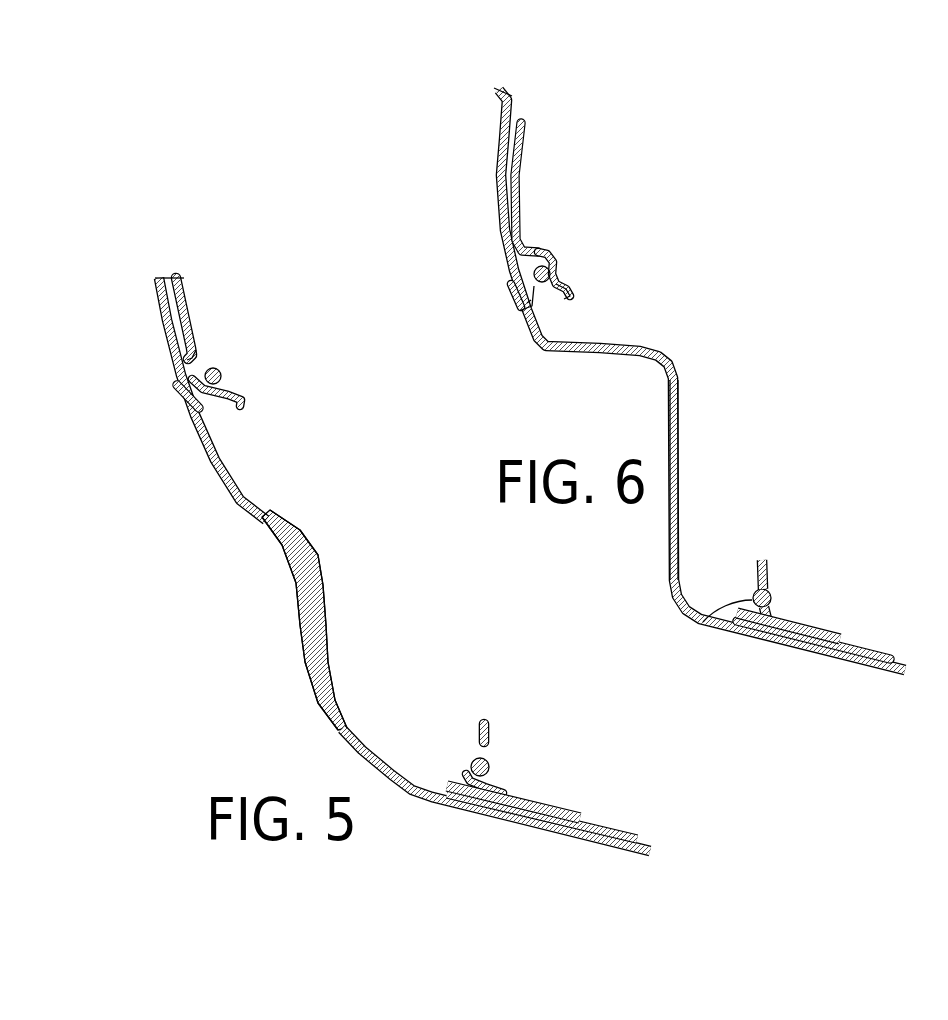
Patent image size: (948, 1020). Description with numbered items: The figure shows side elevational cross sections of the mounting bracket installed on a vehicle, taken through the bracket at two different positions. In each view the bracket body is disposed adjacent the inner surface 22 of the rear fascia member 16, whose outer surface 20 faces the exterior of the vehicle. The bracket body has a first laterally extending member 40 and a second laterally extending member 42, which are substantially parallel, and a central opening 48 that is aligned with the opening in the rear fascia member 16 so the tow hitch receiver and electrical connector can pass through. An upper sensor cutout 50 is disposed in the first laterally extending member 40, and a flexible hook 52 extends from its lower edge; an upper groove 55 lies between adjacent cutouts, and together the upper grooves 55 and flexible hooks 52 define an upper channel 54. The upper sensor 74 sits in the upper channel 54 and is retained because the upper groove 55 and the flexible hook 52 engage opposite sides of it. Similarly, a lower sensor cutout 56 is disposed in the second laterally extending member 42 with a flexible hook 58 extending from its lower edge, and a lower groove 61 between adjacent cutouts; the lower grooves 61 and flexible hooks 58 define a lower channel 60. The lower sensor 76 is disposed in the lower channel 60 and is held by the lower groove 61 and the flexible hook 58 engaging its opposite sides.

In FIG. 5, the rear fascia member 16 is at (296, 597).
In FIG. 6, the rear fascia member 16 is at (670, 538).
In FIG. 5, the outer surface 20 is at (318, 704).
In FIG. 6, the outer surface 20 is at (670, 410).
In FIG. 5, the inner surface 22 is at (262, 518).
In FIG. 6, the inner surface 22 is at (678, 430).
In FIG. 5, the first laterally extending member 40 is at (190, 320).
In FIG. 6, the first laterally extending member 40 is at (518, 200).
In FIG. 5, the second laterally extending member 42 is at (556, 803).
In FIG. 6, the second laterally extending member 42 is at (824, 630).
In FIG. 5, the central opening 48 is at (240, 405).
In FIG. 6, the central opening 48 is at (570, 297).
In FIG. 5, the upper sensor cutout 50 is at (195, 359).
In FIG. 5, the flexible hook 52 is at (178, 383).
In FIG. 6, the upper channel 54 is at (551, 268).
In FIG. 6, the upper groove 55 is at (512, 284).
In FIG. 5, the lower sensor cutout 56 is at (488, 745).
In FIG. 5, the flexible hook 58 is at (466, 773).
In FIG. 6, the lower channel 60 is at (770, 588).
In FIG. 6, the lower groove 61 is at (712, 618).
In FIG. 5, the upper sensor 74 is at (221, 372).
In FIG. 6, the upper sensor 74 is at (540, 271).
In FIG. 5, the lower sensor 76 is at (491, 767).
In FIG. 6, the lower sensor 76 is at (757, 593).